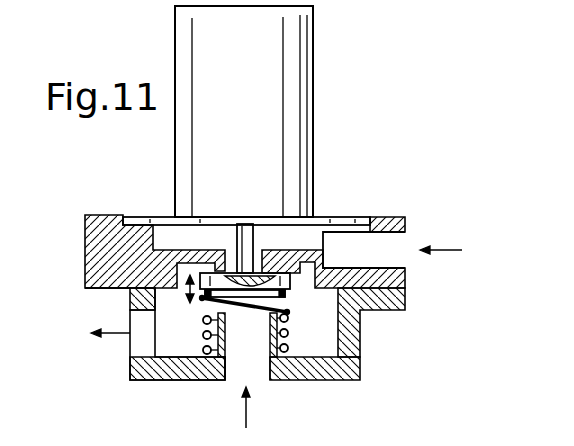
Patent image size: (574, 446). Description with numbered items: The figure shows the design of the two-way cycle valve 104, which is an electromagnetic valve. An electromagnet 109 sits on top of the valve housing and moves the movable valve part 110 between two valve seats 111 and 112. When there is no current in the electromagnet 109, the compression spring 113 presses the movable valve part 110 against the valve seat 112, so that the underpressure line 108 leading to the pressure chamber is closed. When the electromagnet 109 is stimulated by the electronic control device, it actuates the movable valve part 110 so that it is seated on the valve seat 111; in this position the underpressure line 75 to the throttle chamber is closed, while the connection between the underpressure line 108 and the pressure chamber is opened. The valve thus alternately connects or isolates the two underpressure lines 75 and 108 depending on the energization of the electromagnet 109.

The electromagnet 109 is at (294, 77).
The 2-way cycle valve 104 is at (349, 181).
The underpressure line 108 is at (395, 247).
The valve seat 112 is at (272, 271).
The movable valve part 110 is at (289, 284).
The valve seat 111 is at (206, 313).
The compression spring 113 is at (292, 350).
The underpressure line 75 is at (113, 333).